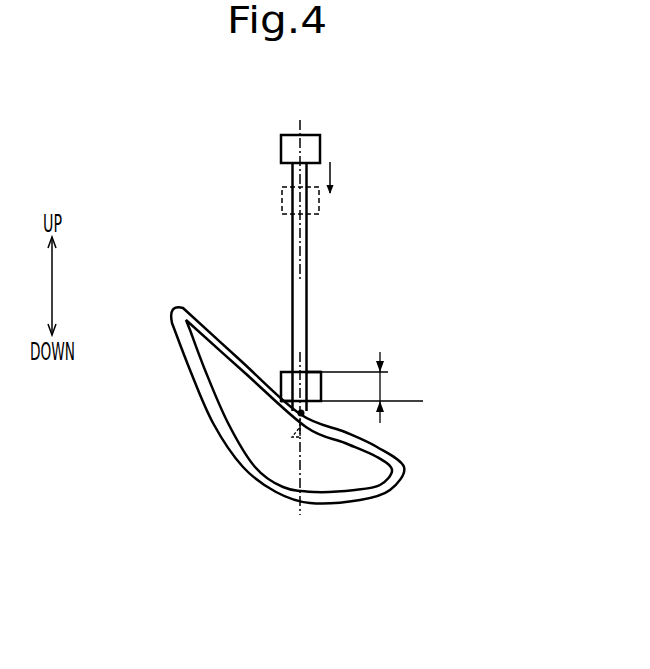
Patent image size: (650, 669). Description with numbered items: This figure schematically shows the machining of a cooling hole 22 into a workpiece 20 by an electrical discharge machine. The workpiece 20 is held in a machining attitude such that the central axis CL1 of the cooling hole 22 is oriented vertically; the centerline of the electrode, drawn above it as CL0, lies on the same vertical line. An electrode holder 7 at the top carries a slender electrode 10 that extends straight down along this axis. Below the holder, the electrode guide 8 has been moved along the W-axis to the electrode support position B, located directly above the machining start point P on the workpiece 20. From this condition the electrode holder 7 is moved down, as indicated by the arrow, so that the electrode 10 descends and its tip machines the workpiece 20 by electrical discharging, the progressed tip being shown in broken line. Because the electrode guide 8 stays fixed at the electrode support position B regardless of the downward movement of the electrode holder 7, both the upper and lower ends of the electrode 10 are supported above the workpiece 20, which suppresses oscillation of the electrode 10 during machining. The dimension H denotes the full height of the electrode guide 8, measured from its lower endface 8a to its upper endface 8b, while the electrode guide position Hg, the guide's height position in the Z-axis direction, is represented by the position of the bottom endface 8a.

The electrode holder 7 is at (281, 148).
The electrode 10 is at (307, 287).
The electrode guide 8 is at (281, 386).
The lower endface 8a is at (292, 410).
The upper endface 8b is at (313, 372).
The workpiece 20 is at (408, 446).
The cooling hole 22 is at (299, 425).
The machining start point P is at (298, 416).
The electrode support position B is at (350, 356).
The height of electrode guide H is at (372, 387).
The electrode guide position Hg is at (442, 399).
The center line CL0 is at (302, 183).
The central axis of cooling hole CL1 is at (301, 450).